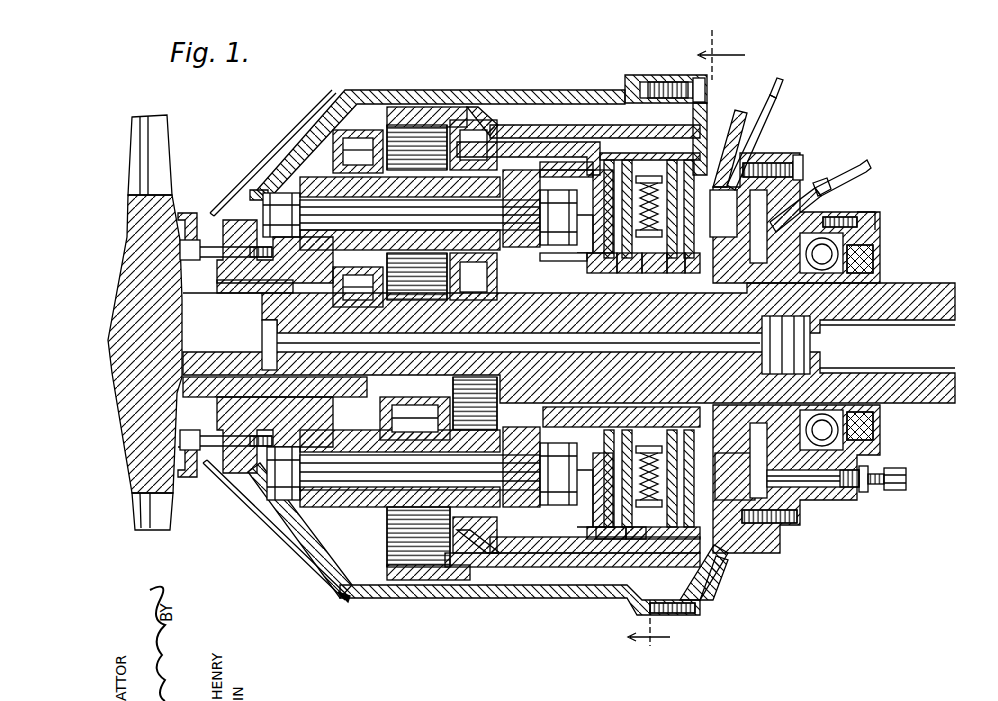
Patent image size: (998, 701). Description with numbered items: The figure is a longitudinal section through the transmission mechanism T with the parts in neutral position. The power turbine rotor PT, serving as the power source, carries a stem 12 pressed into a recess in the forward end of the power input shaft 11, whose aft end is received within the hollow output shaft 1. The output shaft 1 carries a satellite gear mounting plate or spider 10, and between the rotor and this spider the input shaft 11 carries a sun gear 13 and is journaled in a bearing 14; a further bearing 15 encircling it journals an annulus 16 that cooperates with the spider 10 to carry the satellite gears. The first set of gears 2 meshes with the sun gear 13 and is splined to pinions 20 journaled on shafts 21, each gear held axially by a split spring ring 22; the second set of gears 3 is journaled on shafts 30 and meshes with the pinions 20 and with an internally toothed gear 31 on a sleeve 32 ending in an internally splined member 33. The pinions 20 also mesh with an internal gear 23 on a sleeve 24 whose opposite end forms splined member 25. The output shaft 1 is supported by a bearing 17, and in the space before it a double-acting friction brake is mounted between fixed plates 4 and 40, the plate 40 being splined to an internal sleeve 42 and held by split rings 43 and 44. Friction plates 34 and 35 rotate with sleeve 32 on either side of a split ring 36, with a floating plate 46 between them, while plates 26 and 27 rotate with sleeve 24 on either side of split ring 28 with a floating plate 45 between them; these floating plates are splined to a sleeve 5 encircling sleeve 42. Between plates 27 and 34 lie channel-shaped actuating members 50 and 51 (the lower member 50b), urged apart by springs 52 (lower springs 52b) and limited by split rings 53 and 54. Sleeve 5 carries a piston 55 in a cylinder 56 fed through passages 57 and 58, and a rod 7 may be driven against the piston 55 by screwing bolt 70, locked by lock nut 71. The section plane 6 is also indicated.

The power turbine rotor PT is at (162, 143).
The rotor stem 12 is at (200, 330).
The power input shaft 11 is at (190, 392).
The satellite gears of first set 2 is at (352, 641).
The section line 6- 6 is at (686, 345).
The transmission mechanism T is at (512, 92).
The split ring 28 is at (624, 125).
The friction plate 34 is at (676, 112).
The split ring 36 is at (700, 112).
The annulus 16 is at (292, 524).
The shaft 21 is at (324, 191).
The split spring ring 22 is at (372, 228).
The pinion 20 is at (400, 200).
The internally toothed gear 31 is at (402, 106).
The internal gear 23 is at (462, 190).
The sleeve 32 is at (550, 128).
The sleeve 24 is at (530, 142).
The satellite gear mounting plate or spider 10 is at (528, 175).
The floating friction plate 45 is at (576, 165).
The springs 52 is at (582, 178).
The fixed friction plate 40 is at (594, 196).
The sleeve 5 is at (591, 236).
The internally splined member 25 is at (608, 160).
The friction plate 26 is at (626, 160).
The friction plate 27 is at (652, 160).
The brake actuating friction member 50 is at (688, 158).
The internal sleeve 42 is at (562, 256).
The split ring 43 is at (582, 272).
The split ring 44 is at (606, 272).
The split ring 53 is at (634, 272).
The split ring 54 is at (660, 272).
The floating friction plate 46 is at (690, 272).
The output shaft 1 is at (936, 290).
The bearing 14 is at (312, 402).
The bearing 15 is at (302, 428).
The sun gear 13 is at (372, 408).
The shaft 30 is at (348, 500).
The satellite gears of second set 3 is at (386, 552).
The fixed friction plate 4 is at (790, 205).
The pressure plate (lower) 50b is at (602, 554).
The retaining ring (lower) 52b is at (632, 555).
The brake actuating friction member 51 is at (712, 563).
The bearing 17 is at (858, 240).
The passage 57 is at (765, 160).
The cylinder 56 is at (797, 162).
The passage 58 is at (832, 208).
The piston 55 is at (838, 216).
The internally splined member 33 is at (737, 135).
The friction plate 35 is at (768, 95).
The rod 7 is at (815, 492).
The lock nut 71 is at (871, 493).
The bolt 70 is at (904, 478).